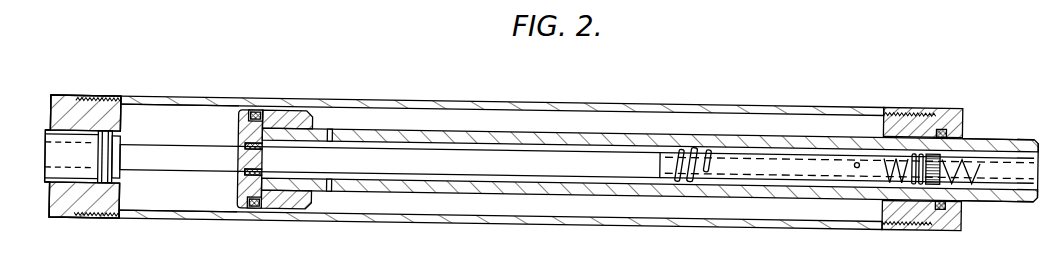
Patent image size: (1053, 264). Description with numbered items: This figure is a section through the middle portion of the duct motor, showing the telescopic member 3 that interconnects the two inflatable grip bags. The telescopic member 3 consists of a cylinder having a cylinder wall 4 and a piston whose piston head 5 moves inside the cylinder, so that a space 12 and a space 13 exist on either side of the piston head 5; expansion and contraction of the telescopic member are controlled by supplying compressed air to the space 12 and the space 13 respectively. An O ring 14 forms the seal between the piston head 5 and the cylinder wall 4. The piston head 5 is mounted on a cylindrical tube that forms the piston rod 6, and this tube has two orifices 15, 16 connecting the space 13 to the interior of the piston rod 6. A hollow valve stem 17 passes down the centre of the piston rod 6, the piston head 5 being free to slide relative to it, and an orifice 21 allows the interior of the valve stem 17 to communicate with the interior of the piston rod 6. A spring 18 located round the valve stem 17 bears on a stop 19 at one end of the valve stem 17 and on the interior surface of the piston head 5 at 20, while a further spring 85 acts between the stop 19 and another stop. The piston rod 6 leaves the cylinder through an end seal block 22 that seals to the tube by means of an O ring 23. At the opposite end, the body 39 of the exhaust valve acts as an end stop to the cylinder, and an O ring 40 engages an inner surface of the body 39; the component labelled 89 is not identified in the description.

The telescopic member 3 is at (516, 95).
The cylinder wall 4 is at (583, 103).
The piston head 5 is at (295, 110).
The piston rod 6 is at (1008, 143).
The space 12 is at (200, 113).
The space 13 is at (744, 117).
The O ring 14 is at (258, 105).
The orifice 15 is at (331, 130).
The orifice 16 is at (331, 188).
The valve stem 17 is at (445, 155).
The spring 18 is at (692, 150).
The stop 19 is at (932, 157).
The interior surface of the piston head 20 is at (268, 175).
The orifice 21 is at (855, 162).
The end seal block 22 is at (962, 110).
The O ring 23 is at (940, 203).
The body 39 is at (83, 112).
The O ring 40 is at (104, 133).
The spring 85 is at (978, 168).
The washer 89 is at (124, 140).